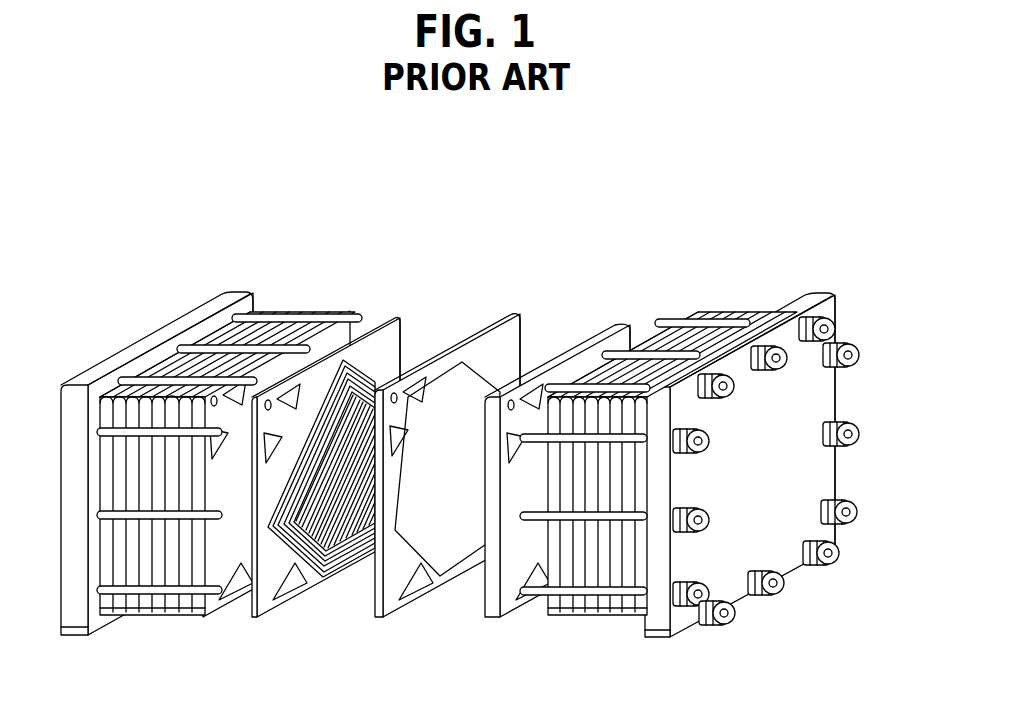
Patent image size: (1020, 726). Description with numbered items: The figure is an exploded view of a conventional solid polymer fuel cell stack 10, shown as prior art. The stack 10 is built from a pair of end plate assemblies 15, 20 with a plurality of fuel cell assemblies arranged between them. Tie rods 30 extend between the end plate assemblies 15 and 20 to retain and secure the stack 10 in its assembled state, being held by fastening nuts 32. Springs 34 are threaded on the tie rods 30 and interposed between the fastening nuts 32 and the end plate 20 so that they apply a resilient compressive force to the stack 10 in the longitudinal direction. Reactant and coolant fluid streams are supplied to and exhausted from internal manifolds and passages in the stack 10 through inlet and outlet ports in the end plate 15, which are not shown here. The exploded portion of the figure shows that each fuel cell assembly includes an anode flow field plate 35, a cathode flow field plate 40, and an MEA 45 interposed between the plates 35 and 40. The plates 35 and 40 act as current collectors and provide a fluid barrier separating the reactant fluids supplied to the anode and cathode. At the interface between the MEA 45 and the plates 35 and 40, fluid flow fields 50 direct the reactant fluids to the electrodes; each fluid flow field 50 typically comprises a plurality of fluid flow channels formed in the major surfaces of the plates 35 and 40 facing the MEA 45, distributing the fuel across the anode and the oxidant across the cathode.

The solid polymer fuel cell stack 10 is at (260, 210).
The end plate assembly 15 is at (117, 358).
The end plate assembly 20 is at (820, 300).
The tie rods 30 is at (276, 335).
The fastening nuts 32 is at (857, 428).
The springs 34 is at (757, 597).
The anode flow field plate 35 is at (400, 318).
The cathode flow field plate 40 is at (630, 323).
The MEA 45 is at (513, 318).
The fluid flow field 50 is at (353, 553).